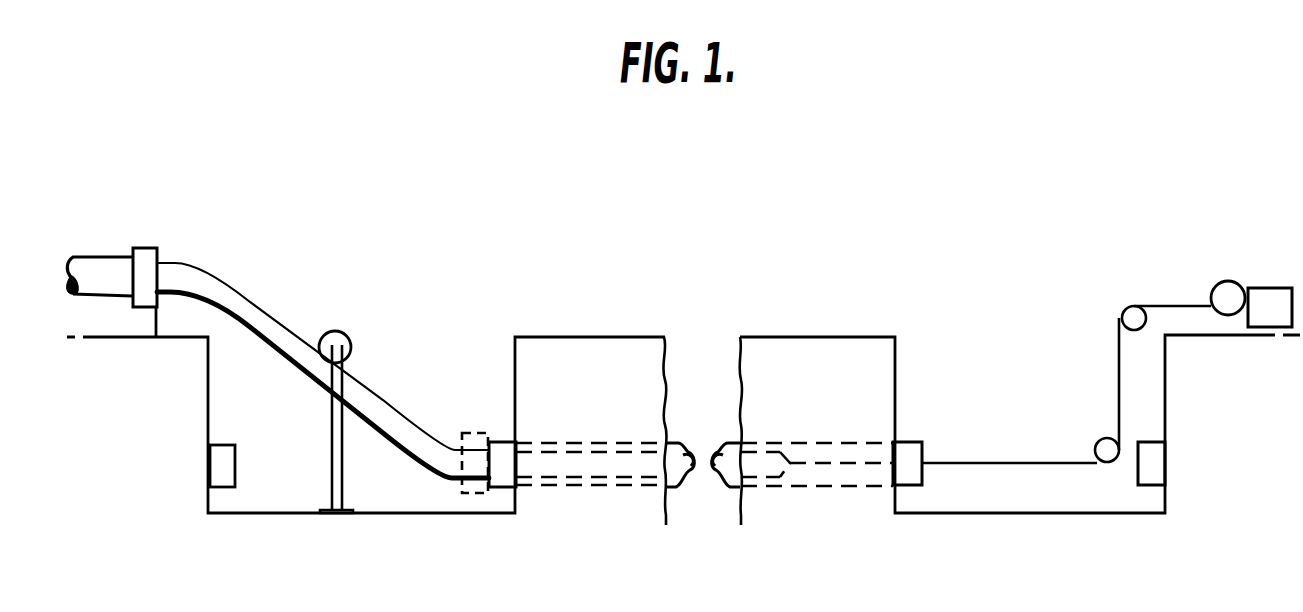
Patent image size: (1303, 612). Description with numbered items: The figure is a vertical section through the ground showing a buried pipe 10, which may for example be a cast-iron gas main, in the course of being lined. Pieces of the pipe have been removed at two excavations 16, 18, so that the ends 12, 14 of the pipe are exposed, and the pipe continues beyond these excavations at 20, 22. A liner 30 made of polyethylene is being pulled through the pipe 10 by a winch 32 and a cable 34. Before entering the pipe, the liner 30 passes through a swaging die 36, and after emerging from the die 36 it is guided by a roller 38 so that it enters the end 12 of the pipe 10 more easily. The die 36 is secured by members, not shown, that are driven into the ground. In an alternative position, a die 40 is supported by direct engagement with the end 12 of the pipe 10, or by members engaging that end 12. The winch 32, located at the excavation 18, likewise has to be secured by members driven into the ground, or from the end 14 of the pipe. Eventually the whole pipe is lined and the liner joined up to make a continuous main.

The buried pipe 10 is at (598, 440).
The end of the pipe 12 is at (504, 443).
The end of the pipe 14 is at (910, 444).
The excavation 16 is at (433, 358).
The excavation 18 is at (972, 352).
The pipe continuation 20 is at (222, 453).
The pipe continuation 22 is at (1148, 455).
The liner 30 is at (92, 268).
The winch 32 is at (1249, 277).
The cable 34 is at (1118, 358).
The swaging die 36 is at (146, 256).
The roller 38 is at (350, 341).
The die 40 is at (483, 436).